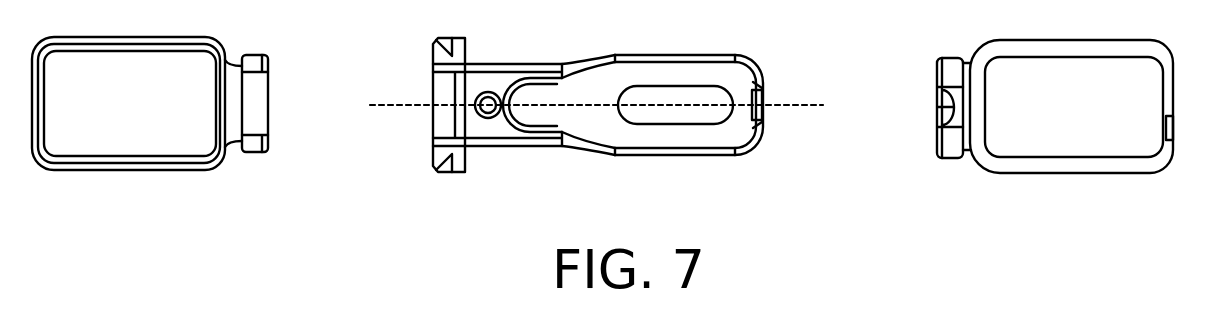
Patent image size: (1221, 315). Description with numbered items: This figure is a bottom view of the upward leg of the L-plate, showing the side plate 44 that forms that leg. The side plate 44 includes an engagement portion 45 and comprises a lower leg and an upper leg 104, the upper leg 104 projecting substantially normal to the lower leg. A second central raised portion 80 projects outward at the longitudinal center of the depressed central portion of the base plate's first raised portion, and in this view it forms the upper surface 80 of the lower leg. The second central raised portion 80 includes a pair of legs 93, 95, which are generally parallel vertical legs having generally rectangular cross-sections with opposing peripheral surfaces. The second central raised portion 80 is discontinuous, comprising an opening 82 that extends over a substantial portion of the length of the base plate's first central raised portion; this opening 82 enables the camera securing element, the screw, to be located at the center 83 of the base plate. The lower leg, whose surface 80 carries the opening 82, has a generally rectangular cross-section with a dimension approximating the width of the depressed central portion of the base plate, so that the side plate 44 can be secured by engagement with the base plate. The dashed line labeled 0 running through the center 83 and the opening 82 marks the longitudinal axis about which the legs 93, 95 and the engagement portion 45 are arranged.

The longitudinal axis 0 is at (587, 105).
The side plate 44 is at (460, 141).
The engagement portion 45 is at (687, 105).
The second central raised portion 80 is at (684, 105).
The opening 82 is at (657, 115).
The center of the base plate 83 is at (797, 105).
The leg 93 is at (615, 57).
The leg 95 is at (568, 138).
The upper leg 104 is at (448, 56).